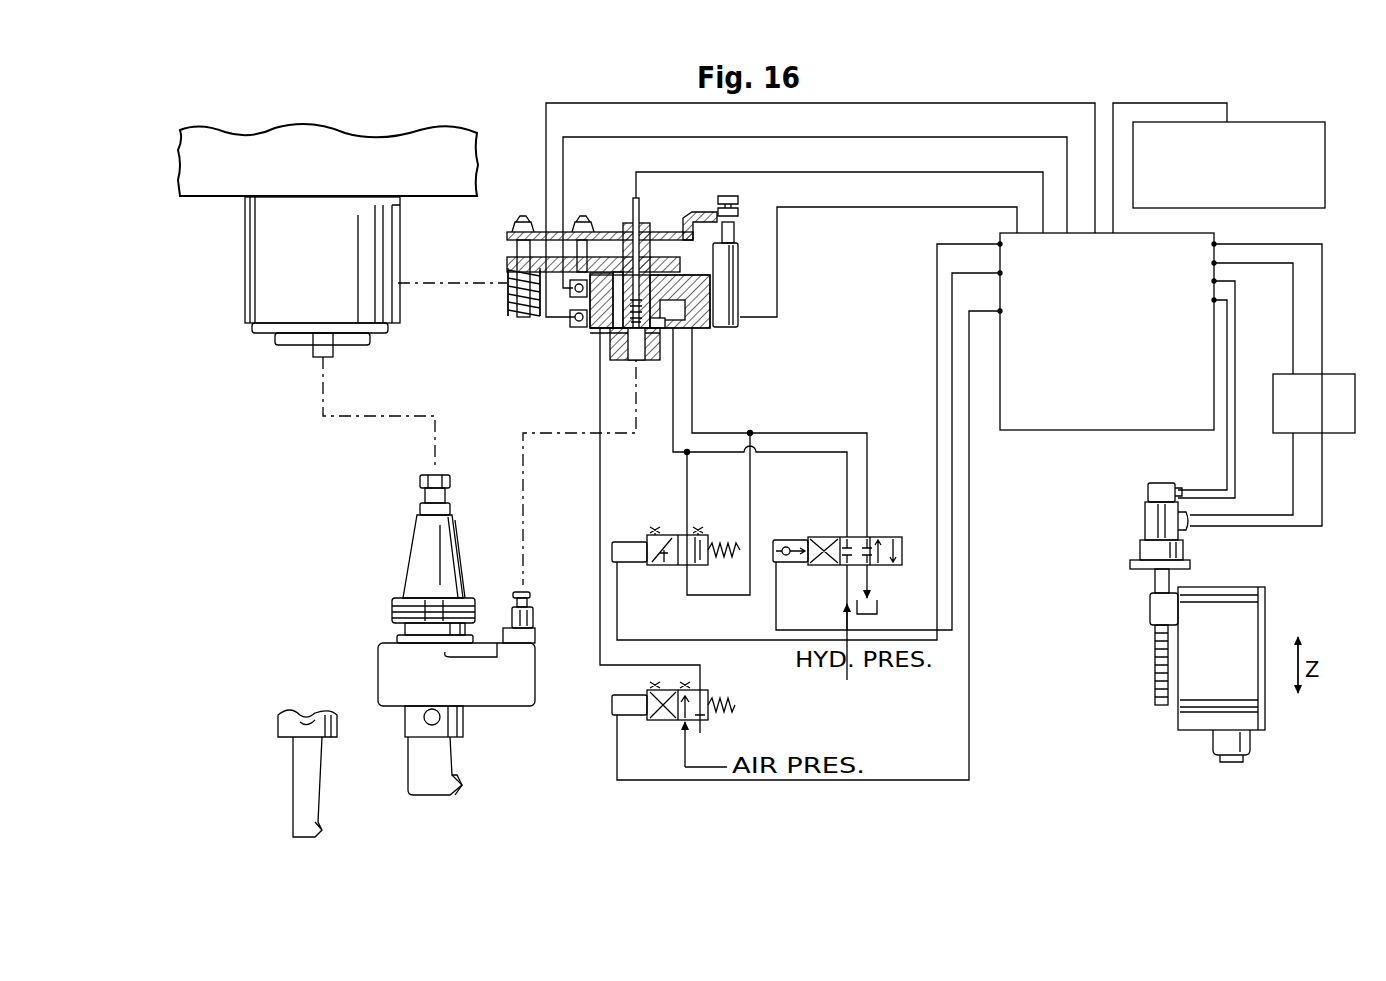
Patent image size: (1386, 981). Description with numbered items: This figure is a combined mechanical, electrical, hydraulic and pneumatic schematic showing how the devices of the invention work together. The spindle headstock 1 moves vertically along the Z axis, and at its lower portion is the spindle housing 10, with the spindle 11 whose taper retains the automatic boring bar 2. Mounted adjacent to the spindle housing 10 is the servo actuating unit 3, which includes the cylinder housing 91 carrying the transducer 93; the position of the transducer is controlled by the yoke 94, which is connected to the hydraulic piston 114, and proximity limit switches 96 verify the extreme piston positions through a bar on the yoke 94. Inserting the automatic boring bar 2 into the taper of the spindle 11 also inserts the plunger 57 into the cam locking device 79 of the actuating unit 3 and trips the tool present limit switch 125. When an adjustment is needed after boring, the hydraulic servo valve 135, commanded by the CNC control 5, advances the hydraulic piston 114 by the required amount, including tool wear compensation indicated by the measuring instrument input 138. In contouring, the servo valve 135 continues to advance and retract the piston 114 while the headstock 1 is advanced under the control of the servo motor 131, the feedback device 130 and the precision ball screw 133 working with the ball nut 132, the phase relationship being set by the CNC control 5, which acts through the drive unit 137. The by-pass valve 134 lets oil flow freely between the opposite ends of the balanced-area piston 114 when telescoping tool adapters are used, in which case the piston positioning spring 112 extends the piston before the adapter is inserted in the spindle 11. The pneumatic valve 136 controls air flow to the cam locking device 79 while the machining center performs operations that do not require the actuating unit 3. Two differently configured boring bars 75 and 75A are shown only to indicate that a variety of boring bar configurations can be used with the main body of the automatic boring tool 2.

The spindle headstock 1 is at (1248, 587).
The automatic boring bar 2 is at (383, 672).
The servo actuating unit 3 is at (583, 342).
The CNC control 5 is at (1038, 430).
The spindle housing 10 is at (250, 262).
The spindle 11 is at (278, 340).
The plunger 57 is at (533, 612).
The boring bar 75 is at (455, 762).
The boring bar 75A is at (318, 768).
The cam locking device 79 is at (655, 350).
The cylinder housing 91 is at (700, 340).
The transducer 93 is at (738, 300).
The yoke 94 is at (507, 262).
The proximity limit switches 96 is at (575, 322).
The piston positioning spring 112 is at (507, 298).
The hydraulic piston 114 is at (640, 225).
The tool present limit switch 125 is at (632, 212).
The feedback device 130 is at (1155, 492).
The servo motor 131 is at (1150, 524).
The ball nut 132 is at (1158, 612).
The precision ball screw 133 is at (1150, 660).
The by-pass valve 134 is at (640, 562).
The hydraulic servo valve 135 is at (800, 562).
The pneumatic valve 136 is at (628, 715).
The drive unit 137 is at (1340, 433).
The measuring instrument input 138 is at (1236, 208).